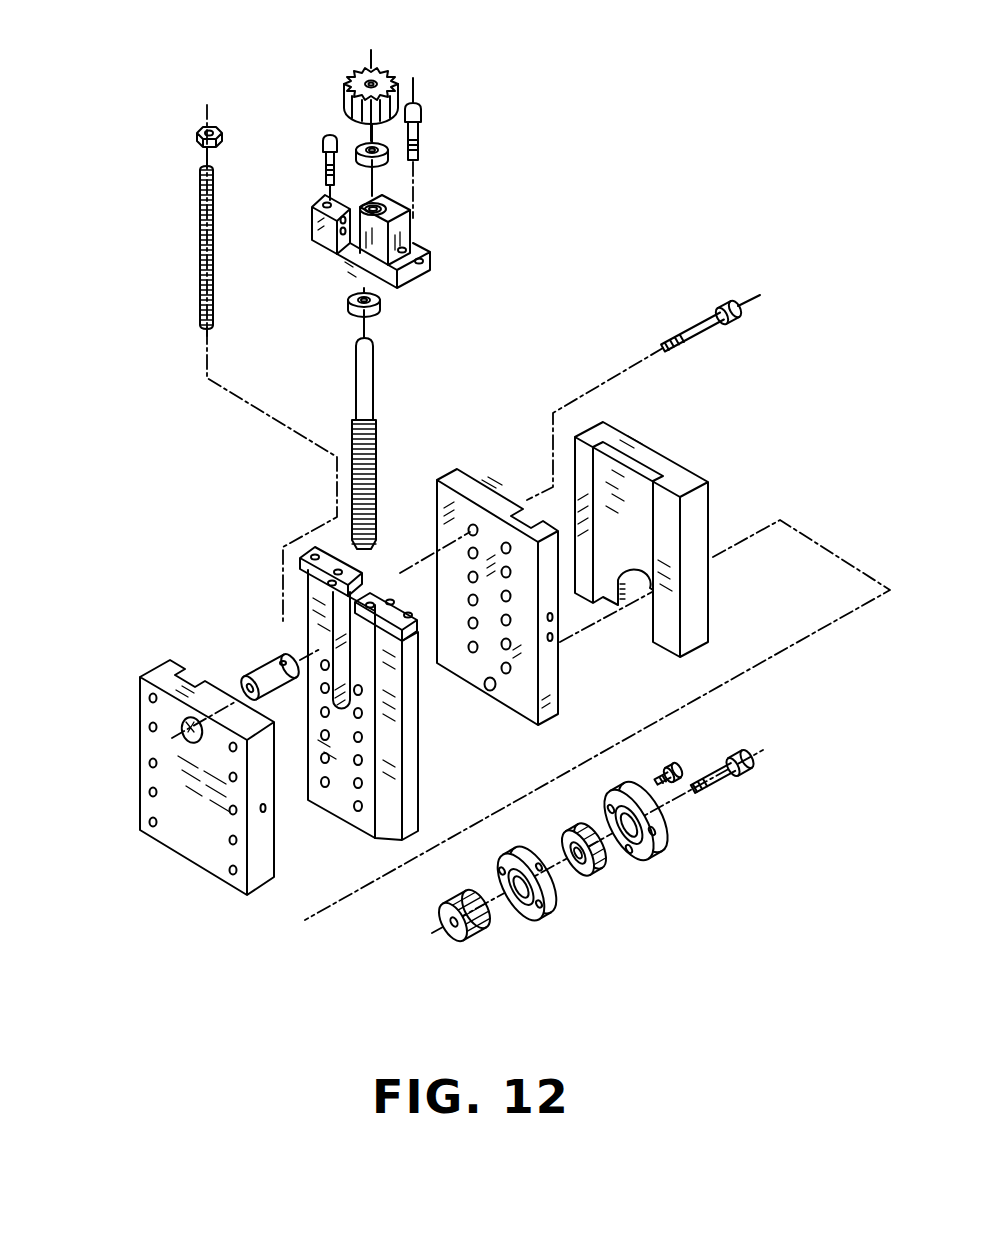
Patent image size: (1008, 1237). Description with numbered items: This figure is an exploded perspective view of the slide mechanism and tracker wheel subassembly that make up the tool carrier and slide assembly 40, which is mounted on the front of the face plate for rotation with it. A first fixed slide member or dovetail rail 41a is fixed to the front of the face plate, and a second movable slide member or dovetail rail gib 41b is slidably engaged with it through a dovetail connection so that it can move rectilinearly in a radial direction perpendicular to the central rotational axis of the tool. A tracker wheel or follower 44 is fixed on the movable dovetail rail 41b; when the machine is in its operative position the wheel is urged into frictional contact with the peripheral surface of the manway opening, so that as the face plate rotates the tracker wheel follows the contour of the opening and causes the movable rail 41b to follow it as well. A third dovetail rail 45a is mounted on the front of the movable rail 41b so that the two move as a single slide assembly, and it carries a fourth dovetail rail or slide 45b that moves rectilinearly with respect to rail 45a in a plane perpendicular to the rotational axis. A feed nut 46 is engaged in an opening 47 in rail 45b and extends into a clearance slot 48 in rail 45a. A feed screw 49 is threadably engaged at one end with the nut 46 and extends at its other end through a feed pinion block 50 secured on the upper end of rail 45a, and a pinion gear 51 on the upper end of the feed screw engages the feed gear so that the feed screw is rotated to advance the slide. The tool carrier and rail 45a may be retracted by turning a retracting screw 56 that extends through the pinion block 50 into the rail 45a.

The tool carrier and slide assembly 40 is at (611, 544).
The first fixed slide member or dovetail rail 41a is at (702, 517).
The second movable slide member or dovetail rail gib 41b is at (447, 479).
The tracker wheel or follower 44 is at (625, 893).
The third dovetail rail 45a is at (335, 674).
The fourth dovetail rail or slide 45b is at (159, 777).
The feed nut 46 is at (258, 662).
The opening 47 is at (192, 735).
The clearance slot 48 is at (347, 650).
The feed screw 49 is at (352, 490).
The feed pinion block 50 is at (430, 266).
The pinion gear 51 is at (395, 72).
The retracting screw 56 is at (200, 300).